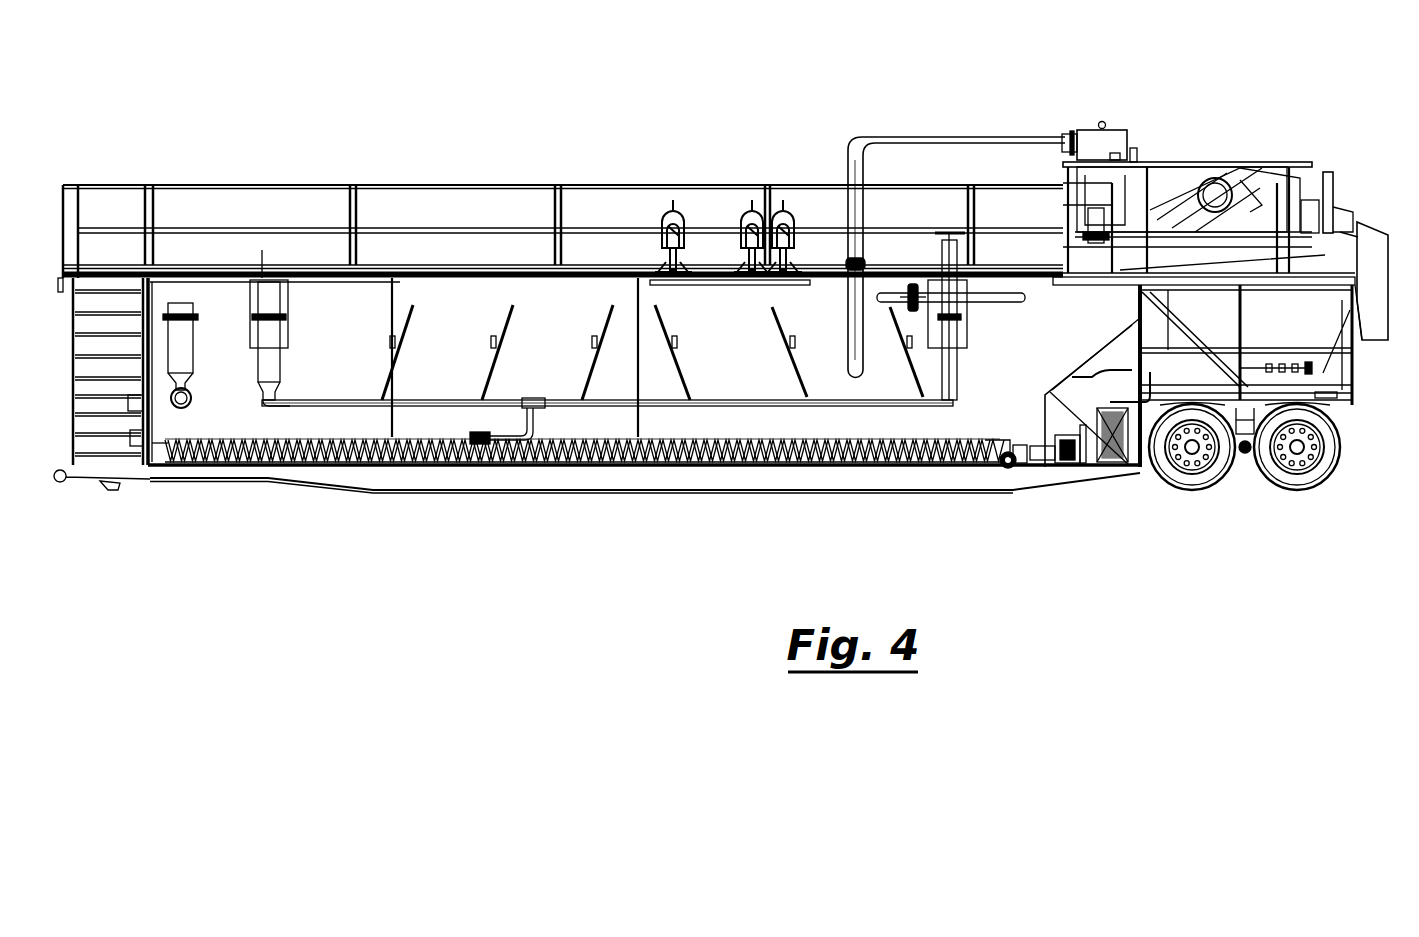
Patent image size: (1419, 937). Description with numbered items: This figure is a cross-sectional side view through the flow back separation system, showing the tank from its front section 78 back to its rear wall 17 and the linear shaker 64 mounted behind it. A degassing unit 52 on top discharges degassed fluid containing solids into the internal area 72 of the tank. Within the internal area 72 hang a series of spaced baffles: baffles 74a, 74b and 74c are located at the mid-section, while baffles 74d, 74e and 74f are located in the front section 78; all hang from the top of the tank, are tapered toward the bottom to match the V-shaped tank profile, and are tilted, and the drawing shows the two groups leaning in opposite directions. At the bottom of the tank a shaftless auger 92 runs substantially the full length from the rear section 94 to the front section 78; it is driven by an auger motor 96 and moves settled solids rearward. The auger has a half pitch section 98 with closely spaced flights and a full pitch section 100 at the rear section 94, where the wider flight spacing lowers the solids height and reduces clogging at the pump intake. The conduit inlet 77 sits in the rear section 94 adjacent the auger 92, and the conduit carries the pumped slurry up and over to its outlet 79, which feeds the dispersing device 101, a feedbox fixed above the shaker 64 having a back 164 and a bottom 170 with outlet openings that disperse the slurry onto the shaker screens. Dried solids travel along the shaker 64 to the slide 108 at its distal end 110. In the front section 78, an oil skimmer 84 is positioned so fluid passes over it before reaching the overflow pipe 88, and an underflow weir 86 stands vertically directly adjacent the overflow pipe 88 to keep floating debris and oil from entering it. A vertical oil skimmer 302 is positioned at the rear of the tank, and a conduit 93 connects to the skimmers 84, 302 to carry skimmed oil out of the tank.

The rear wall 17 is at (1142, 470).
The degassing unit 52 is at (673, 203).
The linear shaker 64 is at (1259, 153).
The internal area 72 is at (458, 320).
The baffle 74a is at (895, 308).
The baffle 74b is at (789, 352).
The baffle 74c is at (657, 302).
The baffle 74d is at (605, 308).
The baffle 74e is at (503, 308).
The baffle 74f is at (405, 305).
The inlet 77 is at (857, 357).
The front section 78 is at (222, 305).
The outlet 79 is at (1065, 135).
The oil skimmer 84 is at (267, 363).
The underflow weir 86 is at (280, 295).
The overflow pipe 88 is at (172, 338).
The shaftless auger 92 is at (298, 452).
The conduit 93 is at (458, 403).
The rear section 94 is at (1013, 423).
The auger motor 96 is at (1072, 468).
The half pitch section 98 is at (555, 463).
The full pitch section 100 is at (970, 468).
The dispersing device 101 is at (1092, 137).
The slide 108 is at (1383, 330).
The distal end 110 is at (1350, 228).
The back 164 is at (1130, 135).
The bottom 170 is at (1120, 202).
The oil skimmer 302 is at (950, 350).